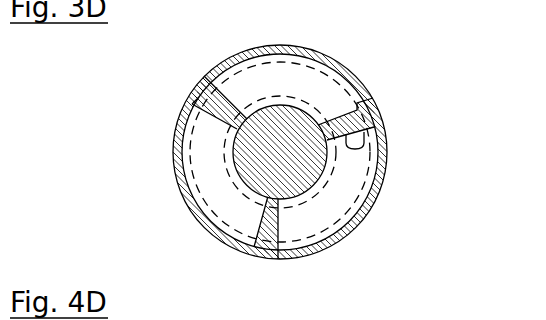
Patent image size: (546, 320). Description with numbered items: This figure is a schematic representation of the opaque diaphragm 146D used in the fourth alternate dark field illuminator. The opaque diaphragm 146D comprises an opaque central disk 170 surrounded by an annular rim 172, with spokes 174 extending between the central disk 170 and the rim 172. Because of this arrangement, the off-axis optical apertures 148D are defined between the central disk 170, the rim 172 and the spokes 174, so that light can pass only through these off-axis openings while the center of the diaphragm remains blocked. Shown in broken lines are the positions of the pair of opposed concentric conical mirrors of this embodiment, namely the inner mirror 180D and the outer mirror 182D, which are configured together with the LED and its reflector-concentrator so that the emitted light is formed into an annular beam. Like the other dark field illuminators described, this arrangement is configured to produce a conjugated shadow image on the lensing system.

The opaque diaphragm 146D is at (207, 60).
The annular rim 172 is at (302, 48).
The opaque central disk 170 is at (235, 158).
The spokes 174 is at (182, 124).
The off-axis optical apertures 148D is at (308, 87).
The outer mirror 182D is at (385, 162).
The inner mirror 180D is at (374, 207).